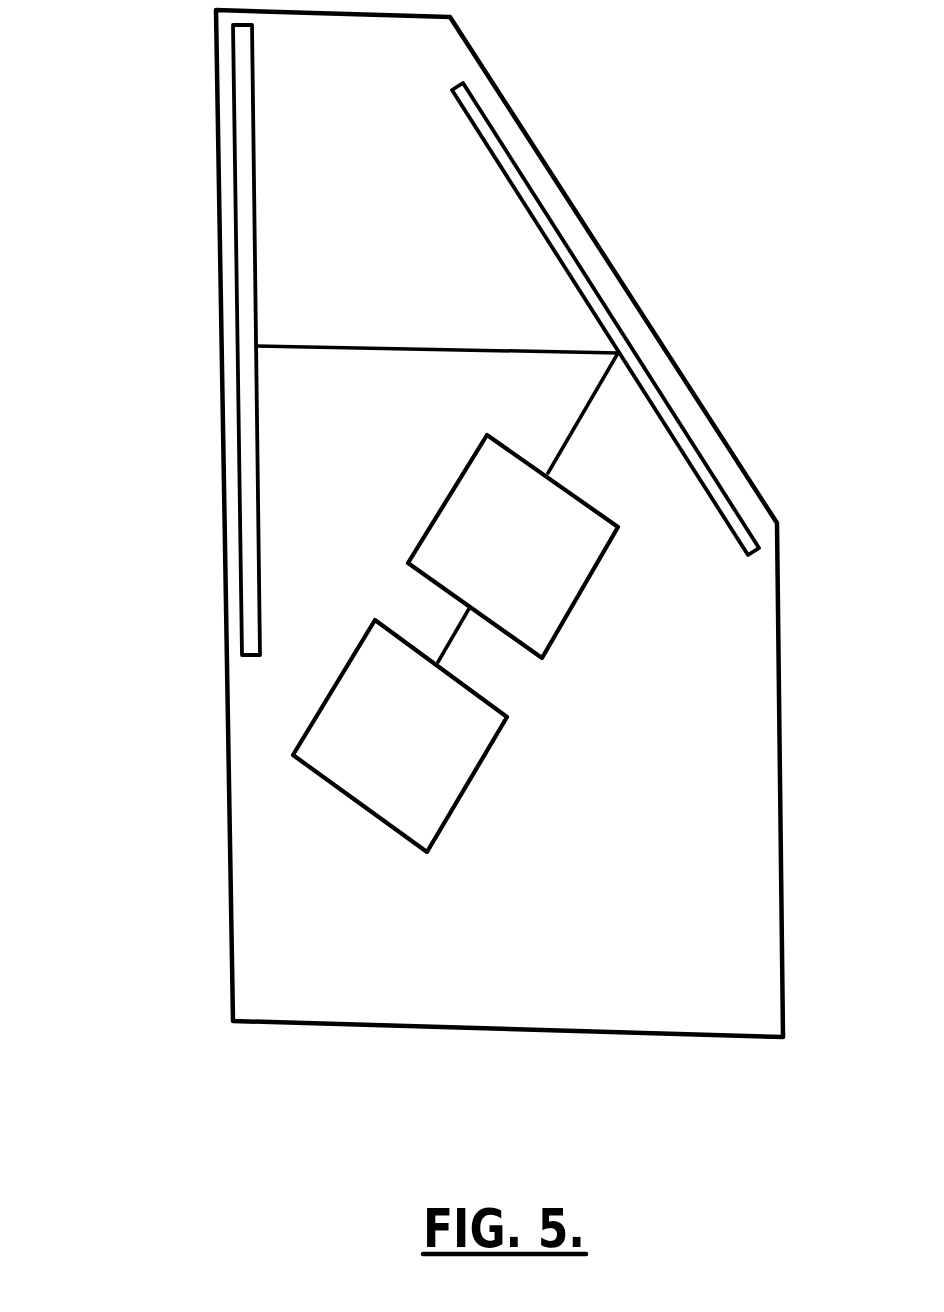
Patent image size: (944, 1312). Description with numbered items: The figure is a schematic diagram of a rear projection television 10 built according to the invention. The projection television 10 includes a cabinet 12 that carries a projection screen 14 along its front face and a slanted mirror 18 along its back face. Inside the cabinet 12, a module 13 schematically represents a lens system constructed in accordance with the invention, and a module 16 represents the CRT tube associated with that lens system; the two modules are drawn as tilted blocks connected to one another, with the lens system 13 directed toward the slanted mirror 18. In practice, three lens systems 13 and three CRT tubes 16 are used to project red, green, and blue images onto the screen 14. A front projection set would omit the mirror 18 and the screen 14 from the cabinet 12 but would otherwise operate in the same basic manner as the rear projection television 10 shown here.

The rear projection television 10 is at (128, 600).
The cabinet 12 is at (780, 745).
The lens system module 13 is at (577, 598).
The projection screen 14 is at (256, 178).
The CRT tube module 16 is at (470, 785).
The slanted mirror 18 is at (510, 183).